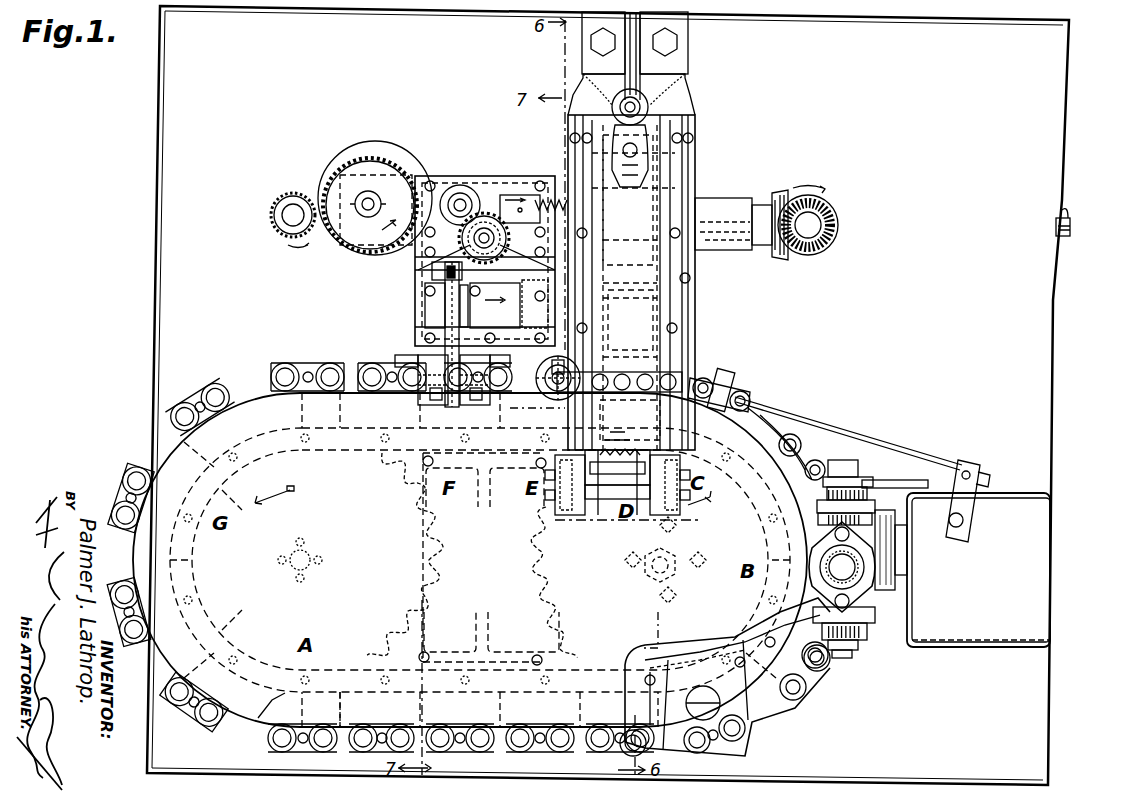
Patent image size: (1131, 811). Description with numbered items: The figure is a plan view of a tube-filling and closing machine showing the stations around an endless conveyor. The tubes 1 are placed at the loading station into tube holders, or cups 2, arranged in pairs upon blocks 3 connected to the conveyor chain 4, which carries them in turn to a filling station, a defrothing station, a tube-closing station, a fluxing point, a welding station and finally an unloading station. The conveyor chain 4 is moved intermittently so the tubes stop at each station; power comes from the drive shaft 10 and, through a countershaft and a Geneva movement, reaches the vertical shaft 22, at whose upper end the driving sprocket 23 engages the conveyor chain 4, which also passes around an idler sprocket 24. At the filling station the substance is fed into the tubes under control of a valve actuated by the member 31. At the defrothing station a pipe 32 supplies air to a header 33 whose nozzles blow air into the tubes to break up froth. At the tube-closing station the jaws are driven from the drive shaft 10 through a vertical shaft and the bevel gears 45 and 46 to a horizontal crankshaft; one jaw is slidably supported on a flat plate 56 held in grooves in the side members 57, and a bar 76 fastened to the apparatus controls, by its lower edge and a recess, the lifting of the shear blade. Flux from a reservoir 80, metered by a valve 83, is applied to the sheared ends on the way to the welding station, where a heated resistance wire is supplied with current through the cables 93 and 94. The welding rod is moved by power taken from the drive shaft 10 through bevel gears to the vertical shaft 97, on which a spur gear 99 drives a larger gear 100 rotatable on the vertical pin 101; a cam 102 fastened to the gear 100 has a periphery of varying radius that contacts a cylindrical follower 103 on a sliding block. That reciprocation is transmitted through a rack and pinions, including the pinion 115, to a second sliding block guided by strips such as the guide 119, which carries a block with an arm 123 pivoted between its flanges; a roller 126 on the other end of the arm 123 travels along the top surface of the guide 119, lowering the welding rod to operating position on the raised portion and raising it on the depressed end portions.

The tubes 1 is at (330, 371).
The tube holders, or cups 2 is at (222, 708).
The blocks 3 is at (270, 708).
The conveyor chain 4 is at (402, 688).
The drive shaft 10 is at (1068, 227).
The vertical shaft 22 is at (652, 578).
The driving sprocket 23 is at (540, 576).
The idler sprocket 24 is at (446, 540).
The member 31 is at (900, 482).
The pipe 32 is at (730, 386).
The header 33 is at (768, 400).
The bevel gear 45 is at (840, 230).
The bevel gear 46 is at (780, 200).
The flat plate 56 is at (642, 510).
The side members 57 is at (584, 512).
The bar 76 is at (575, 318).
The reservoir 80 is at (505, 402).
The valve 83 is at (568, 374).
The cable 93 is at (490, 370).
The cable 94 is at (420, 368).
The vertical shaft 97 is at (288, 220).
The spur gear 99 is at (273, 205).
The gear 100 is at (357, 160).
The vertical pin 101 is at (395, 192).
The cam 102 is at (406, 165).
The cylindrical follower 103 is at (460, 185).
The pinion 115 is at (489, 215).
The strip 119 is at (540, 258).
The arm 123 is at (445, 340).
The roller 126 is at (440, 272).